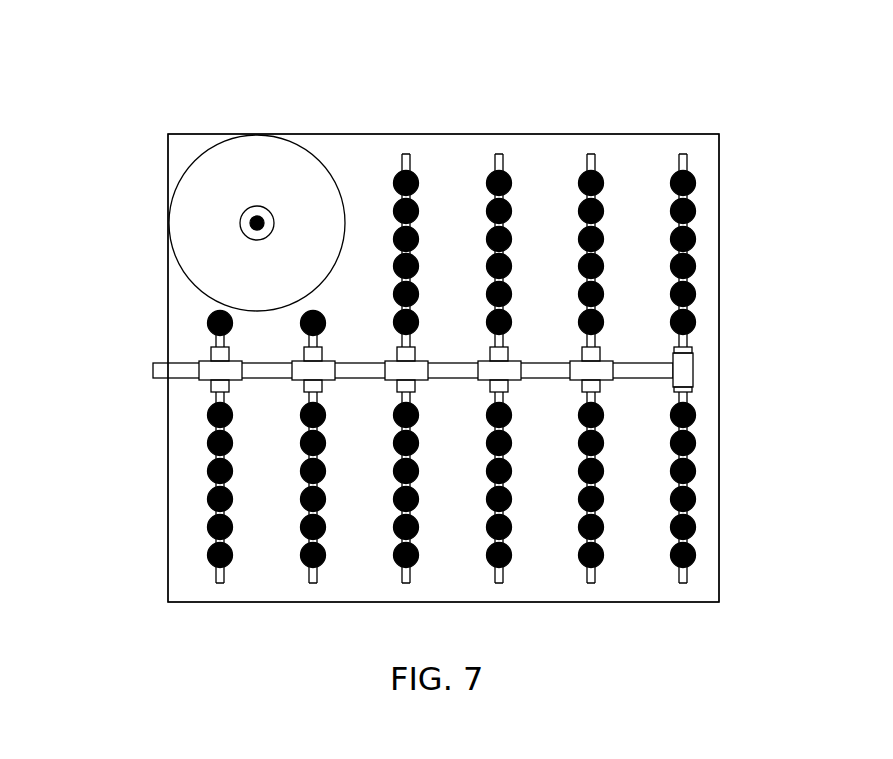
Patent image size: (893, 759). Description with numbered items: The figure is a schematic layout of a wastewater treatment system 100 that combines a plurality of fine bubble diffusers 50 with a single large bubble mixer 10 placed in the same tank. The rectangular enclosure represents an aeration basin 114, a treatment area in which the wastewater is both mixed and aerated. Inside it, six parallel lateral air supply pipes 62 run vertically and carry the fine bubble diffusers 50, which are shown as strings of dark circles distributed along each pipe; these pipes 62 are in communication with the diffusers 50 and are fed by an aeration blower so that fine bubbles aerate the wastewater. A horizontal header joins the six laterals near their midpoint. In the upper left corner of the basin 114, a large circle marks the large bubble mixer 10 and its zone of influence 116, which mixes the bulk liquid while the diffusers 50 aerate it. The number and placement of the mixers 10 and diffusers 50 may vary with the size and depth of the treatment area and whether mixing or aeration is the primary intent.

The wastewater treatment system 100 is at (127, 63).
The aeration basin 114 is at (652, 145).
The spool 116 is at (176, 172).
The large bubble mixer 10 is at (262, 217).
The fine bubble diffuser 50 is at (418, 295).
The lateral air supply pipe 62 is at (445, 368).